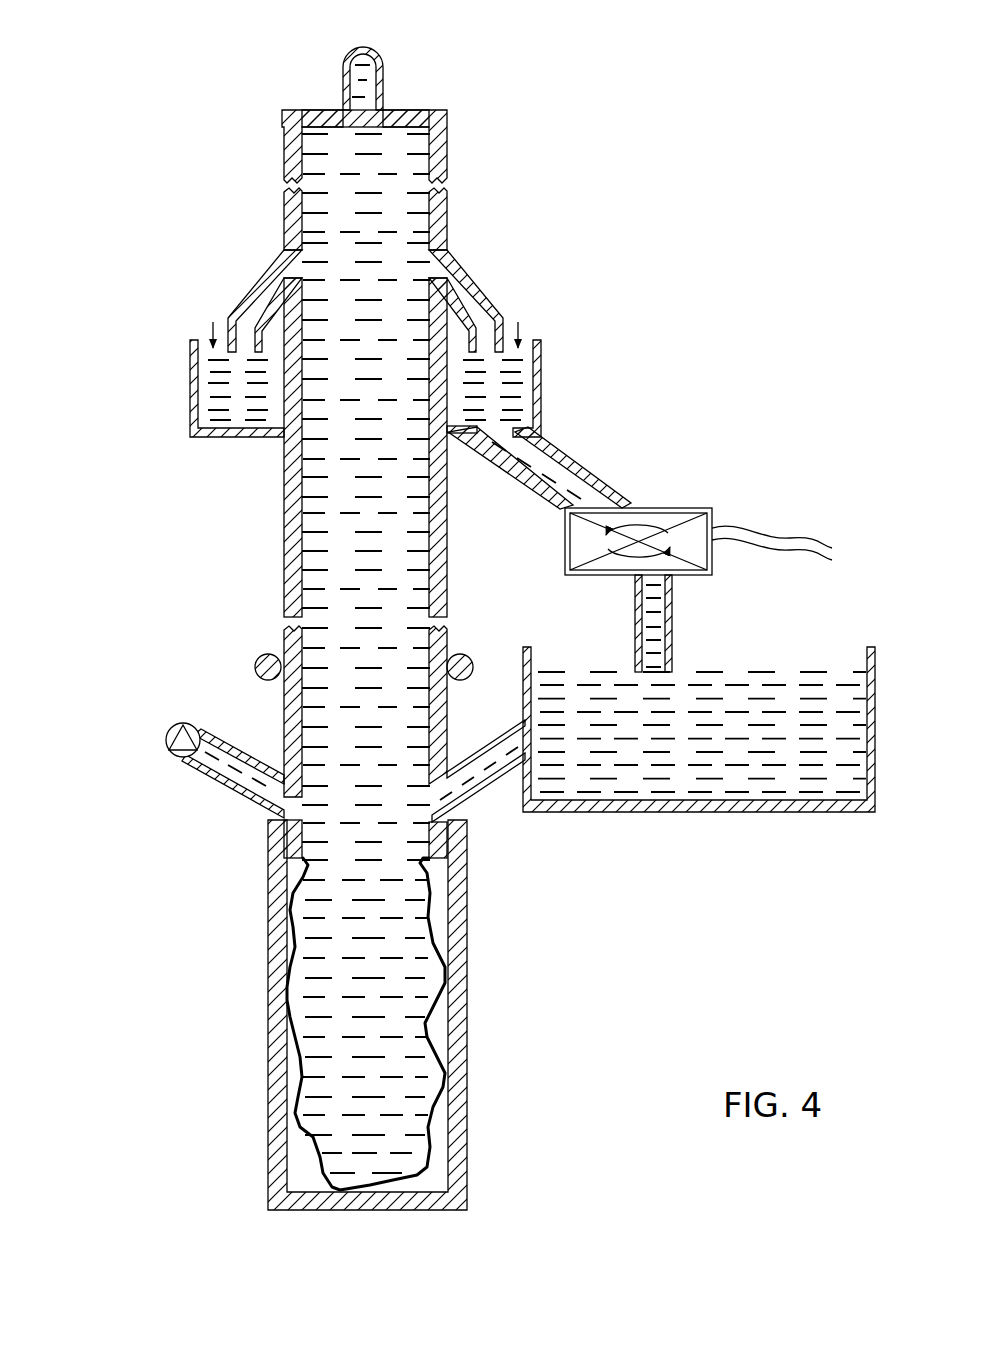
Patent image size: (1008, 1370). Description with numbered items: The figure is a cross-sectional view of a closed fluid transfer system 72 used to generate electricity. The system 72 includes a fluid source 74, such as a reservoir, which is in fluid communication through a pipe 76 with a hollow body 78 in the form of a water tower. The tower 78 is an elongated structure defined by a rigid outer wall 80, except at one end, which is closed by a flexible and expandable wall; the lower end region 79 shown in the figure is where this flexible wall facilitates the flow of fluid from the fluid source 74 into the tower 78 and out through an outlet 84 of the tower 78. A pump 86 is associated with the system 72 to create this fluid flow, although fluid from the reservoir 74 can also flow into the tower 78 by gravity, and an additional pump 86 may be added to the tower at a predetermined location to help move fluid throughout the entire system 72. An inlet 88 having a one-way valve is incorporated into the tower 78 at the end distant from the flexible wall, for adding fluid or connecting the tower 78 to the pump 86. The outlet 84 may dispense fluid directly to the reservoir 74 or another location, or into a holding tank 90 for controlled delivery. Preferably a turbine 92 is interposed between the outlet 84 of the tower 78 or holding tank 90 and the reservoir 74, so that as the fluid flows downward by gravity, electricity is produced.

The closed fluid transfer system 72 is at (207, 197).
The fluid source 74 is at (876, 689).
The pipe 76 is at (478, 800).
The hollow body 78 is at (433, 547).
The flexible bag container 79 is at (266, 1048).
The rigid outer wall 80 is at (447, 489).
The outlet 84 is at (240, 301).
The pump 86 is at (181, 723).
The inlet 88 is at (383, 61).
The holding tank 90 is at (548, 386).
The turbine 92 is at (711, 508).